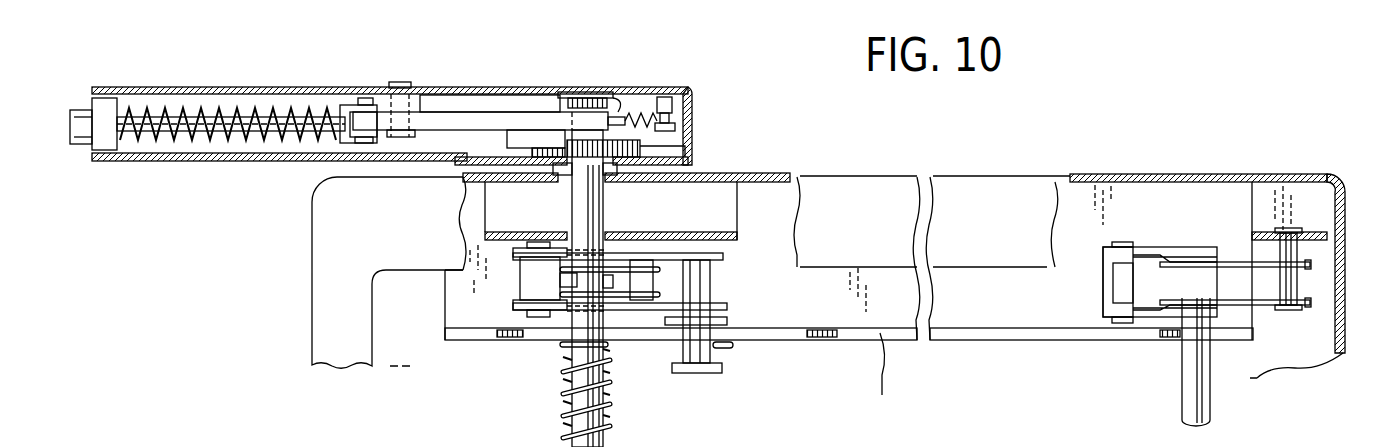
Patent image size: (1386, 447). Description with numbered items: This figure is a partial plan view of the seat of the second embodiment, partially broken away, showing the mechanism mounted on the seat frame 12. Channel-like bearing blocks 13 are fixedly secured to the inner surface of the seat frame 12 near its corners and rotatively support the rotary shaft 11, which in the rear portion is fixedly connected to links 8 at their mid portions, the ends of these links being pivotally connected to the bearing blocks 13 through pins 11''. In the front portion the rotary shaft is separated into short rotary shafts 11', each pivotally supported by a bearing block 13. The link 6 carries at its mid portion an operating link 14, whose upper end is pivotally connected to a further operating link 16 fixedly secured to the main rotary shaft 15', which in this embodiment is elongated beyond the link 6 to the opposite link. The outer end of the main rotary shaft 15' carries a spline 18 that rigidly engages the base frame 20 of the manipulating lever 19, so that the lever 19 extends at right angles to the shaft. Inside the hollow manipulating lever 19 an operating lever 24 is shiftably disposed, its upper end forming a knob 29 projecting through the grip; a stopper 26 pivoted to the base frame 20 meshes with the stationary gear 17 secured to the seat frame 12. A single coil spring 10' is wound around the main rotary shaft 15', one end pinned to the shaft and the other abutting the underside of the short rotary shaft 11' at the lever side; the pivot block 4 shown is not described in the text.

The pivot block 4 is at (1188, 252).
The link 6 is at (538, 293).
The link 8 is at (1263, 263).
The coil spring 10' is at (556, 390).
The rotary shaft 11 is at (1171, 362).
The short rotary shaft 11' is at (730, 321).
The pin 11'' is at (1311, 290).
The seat frame 12 is at (1217, 174).
The bearing block 13 is at (717, 193).
The operating link 14 is at (660, 294).
The main rotary shaft 15' is at (623, 288).
The operating link 16 is at (567, 270).
The stationary gear 17 is at (686, 143).
The spline 18 is at (615, 102).
The manipulating lever 19 is at (168, 162).
The base frame 20 is at (643, 88).
The operating lever 24 is at (464, 122).
The stopper 26 is at (522, 145).
The knob 29 is at (80, 146).